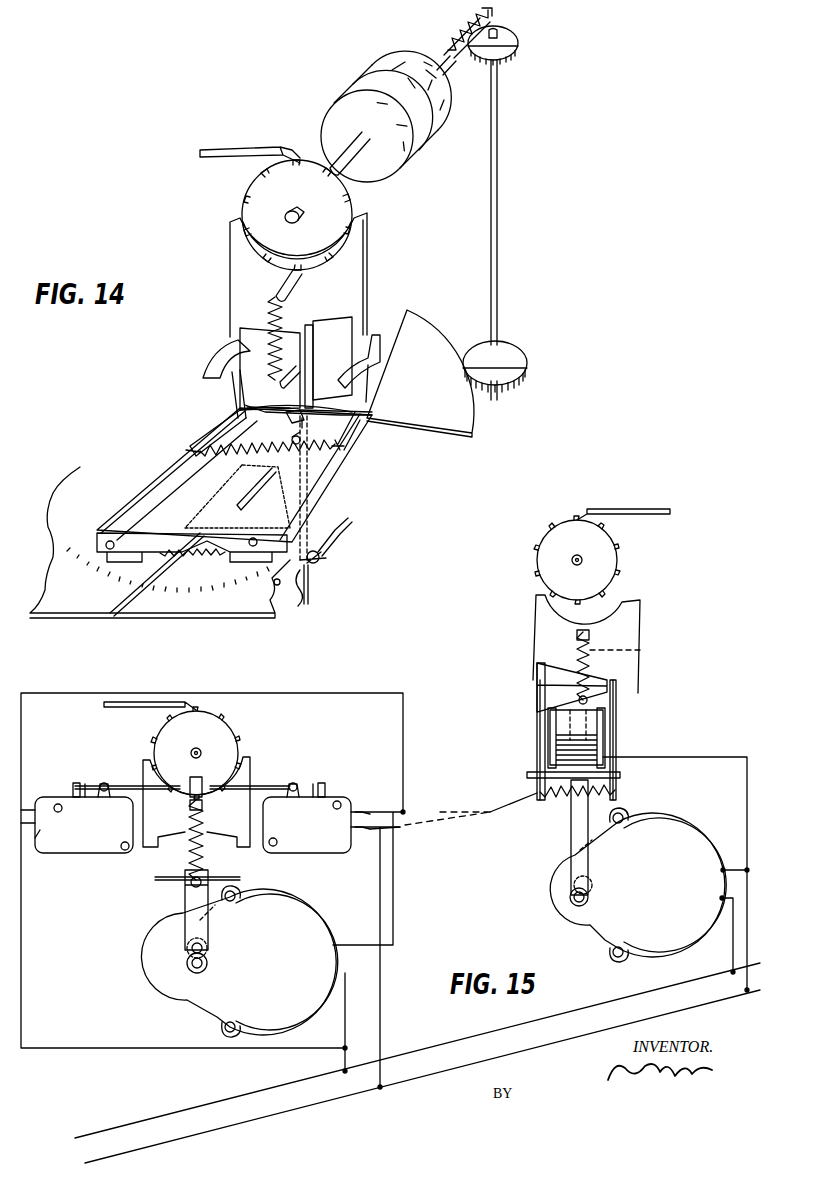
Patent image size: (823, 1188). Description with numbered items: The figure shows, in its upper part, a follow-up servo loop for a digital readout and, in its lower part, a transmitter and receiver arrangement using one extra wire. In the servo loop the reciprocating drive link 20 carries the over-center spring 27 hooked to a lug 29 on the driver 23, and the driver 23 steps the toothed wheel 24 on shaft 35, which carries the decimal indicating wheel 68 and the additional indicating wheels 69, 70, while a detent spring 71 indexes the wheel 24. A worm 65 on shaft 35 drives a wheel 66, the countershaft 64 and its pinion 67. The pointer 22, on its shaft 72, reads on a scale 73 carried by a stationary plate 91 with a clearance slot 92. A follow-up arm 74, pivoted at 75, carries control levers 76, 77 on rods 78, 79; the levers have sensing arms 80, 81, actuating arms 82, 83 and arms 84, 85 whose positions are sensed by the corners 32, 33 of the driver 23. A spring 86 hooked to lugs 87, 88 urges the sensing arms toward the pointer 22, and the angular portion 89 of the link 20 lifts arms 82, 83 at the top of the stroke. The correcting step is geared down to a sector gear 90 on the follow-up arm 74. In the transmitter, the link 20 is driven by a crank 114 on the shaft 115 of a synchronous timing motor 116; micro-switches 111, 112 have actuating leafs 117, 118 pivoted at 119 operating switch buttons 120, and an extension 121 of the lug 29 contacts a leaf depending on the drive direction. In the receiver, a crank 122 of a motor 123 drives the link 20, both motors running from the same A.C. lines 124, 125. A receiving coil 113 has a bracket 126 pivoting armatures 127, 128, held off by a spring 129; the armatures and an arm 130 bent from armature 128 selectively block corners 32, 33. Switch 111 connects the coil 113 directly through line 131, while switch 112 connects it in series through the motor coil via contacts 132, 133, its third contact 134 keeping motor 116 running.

In FIG. 14, the link 20 is at (314, 390).
In FIG. 15, the link 20 is at (186, 910).
In FIG. 14, the pointer 22 is at (128, 612).
In FIG. 15, the pointer 22 is at (166, 881).
In FIG. 14, the driver 23 is at (229, 258).
In FIG. 15, the driver 23 is at (248, 762).
In FIG. 14, the toothed wheel 24 is at (242, 196).
In FIG. 15, the toothed wheel 24 is at (237, 735).
In FIG. 14, the over-center spring 27 is at (268, 352).
In FIG. 15, the over-center spring 27 is at (206, 860).
In FIG. 14, the lug 29 is at (298, 286).
In FIG. 15, the lug 29 is at (190, 808).
In FIG. 14, the sensing corner 32 is at (240, 335).
In FIG. 15, the sensing corner 32 is at (536, 690).
In FIG. 14, the sensing corner 33 is at (352, 348).
In FIG. 15, the sensing corner 33 is at (618, 690).
In FIG. 14, the shaft 35 is at (355, 155).
In FIG. 14, the countershaft 64 is at (499, 175).
In FIG. 14, the worm 65 is at (455, 28).
In FIG. 14, the wheel 66 is at (519, 48).
In FIG. 14, the pinion 67 is at (528, 366).
In FIG. 14, the decimal indicating wheel 68 is at (383, 58).
In FIG. 14, the indicating wheel 69 is at (365, 75).
In FIG. 14, the indicating wheel 70 is at (345, 92).
In FIG. 14, the detent spring 71 is at (243, 148).
In FIG. 15, the detent spring 71 is at (116, 708).
In FIG. 14, the shaft 72 is at (310, 588).
In FIG. 14, the scale 73 is at (200, 618).
In FIG. 14, the follow-up arm 74 is at (321, 558).
In FIG. 14, the pivot 75 is at (291, 438).
In FIG. 14, the control lever 76 is at (172, 468).
In FIG. 14, the control lever 77 is at (322, 488).
In FIG. 14, the rod 78 is at (152, 480).
In FIG. 14, the rod 79 is at (305, 505).
In FIG. 14, the sensing arm 80 is at (168, 532).
In FIG. 14, the sensing arm 81 is at (248, 495).
In FIG. 14, the actuating arm 82 is at (278, 408).
In FIG. 14, the actuating arm 83 is at (355, 408).
In FIG. 14, the arm 84 is at (210, 352).
In FIG. 14, the arm 85 is at (383, 352).
In FIG. 14, the spring 86 is at (232, 458).
In FIG. 14, the lug 87 is at (190, 452).
In FIG. 14, the lug 88 is at (345, 462).
In FIG. 14, the angular portion 89 is at (300, 424).
In FIG. 14, the sector gear 90 is at (474, 428).
In FIG. 14, the stationary plate 91 is at (356, 526).
In FIG. 14, the clearance slot 92 is at (192, 560).
In FIG. 15, the micro-switch 111 is at (92, 850).
In FIG. 15, the micro-switch 112 is at (302, 850).
In FIG. 15, the receiving coil 113 is at (603, 732).
In FIG. 15, the crank 114 is at (189, 953).
In FIG. 15, the shaft 115 is at (190, 964).
In FIG. 15, the synchronous timing motor 116 is at (188, 1003).
In FIG. 15, the actuating leaf 117 is at (121, 786).
In FIG. 15, the actuating leaf 118 is at (270, 788).
In FIG. 15, the pivot 119 is at (101, 783).
In FIG. 15, the switch button 120 is at (74, 790).
In FIG. 15, the extension 121 is at (203, 770).
In FIG. 15, the crank 122 is at (590, 895).
In FIG. 15, the motor 123 is at (550, 903).
In FIG. 15, the A.C. line 124 is at (108, 1125).
In FIG. 15, the A.C. line 125 is at (93, 1159).
In FIG. 15, the bracket 126 is at (622, 778).
In FIG. 15, the armature 127 is at (616, 714).
In FIG. 15, the armature 128 is at (538, 740).
In FIG. 15, the spring 129 is at (550, 800).
In FIG. 15, the arm 130 is at (545, 700).
In FIG. 15, the connecting line 131 is at (474, 816).
In FIG. 15, the contact 132 is at (402, 822).
In FIG. 15, the contact 133 is at (368, 810).
In FIG. 15, the third contact 134 is at (366, 833).